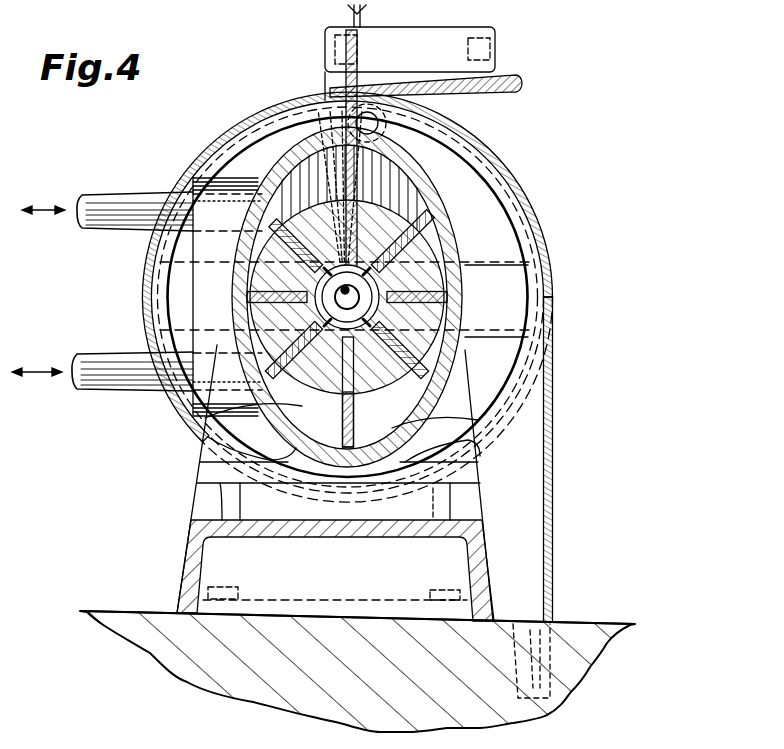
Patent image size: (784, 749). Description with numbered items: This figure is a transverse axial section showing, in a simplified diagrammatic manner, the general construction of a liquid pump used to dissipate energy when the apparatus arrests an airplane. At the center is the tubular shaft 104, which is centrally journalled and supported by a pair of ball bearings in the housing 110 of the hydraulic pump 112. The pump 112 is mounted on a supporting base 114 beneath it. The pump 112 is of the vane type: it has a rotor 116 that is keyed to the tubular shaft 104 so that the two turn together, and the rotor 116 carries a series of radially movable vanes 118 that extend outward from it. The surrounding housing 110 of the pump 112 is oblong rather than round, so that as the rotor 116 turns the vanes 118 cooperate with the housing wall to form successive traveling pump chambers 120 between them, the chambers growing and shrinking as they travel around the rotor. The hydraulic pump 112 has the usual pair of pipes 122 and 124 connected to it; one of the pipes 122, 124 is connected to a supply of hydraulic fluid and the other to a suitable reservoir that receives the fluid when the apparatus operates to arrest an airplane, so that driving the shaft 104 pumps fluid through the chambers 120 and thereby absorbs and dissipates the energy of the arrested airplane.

The tubular shaft 104 is at (445, 320).
The housing 110 is at (444, 218).
The hydraulic pump 112 is at (440, 185).
The supporting base 114 is at (190, 565).
The rotor 116 is at (357, 384).
The radially movable vanes 118 is at (447, 292).
The traveling pump chambers 120 is at (303, 404).
The pipe 122 is at (100, 206).
The pipe 124 is at (120, 380).